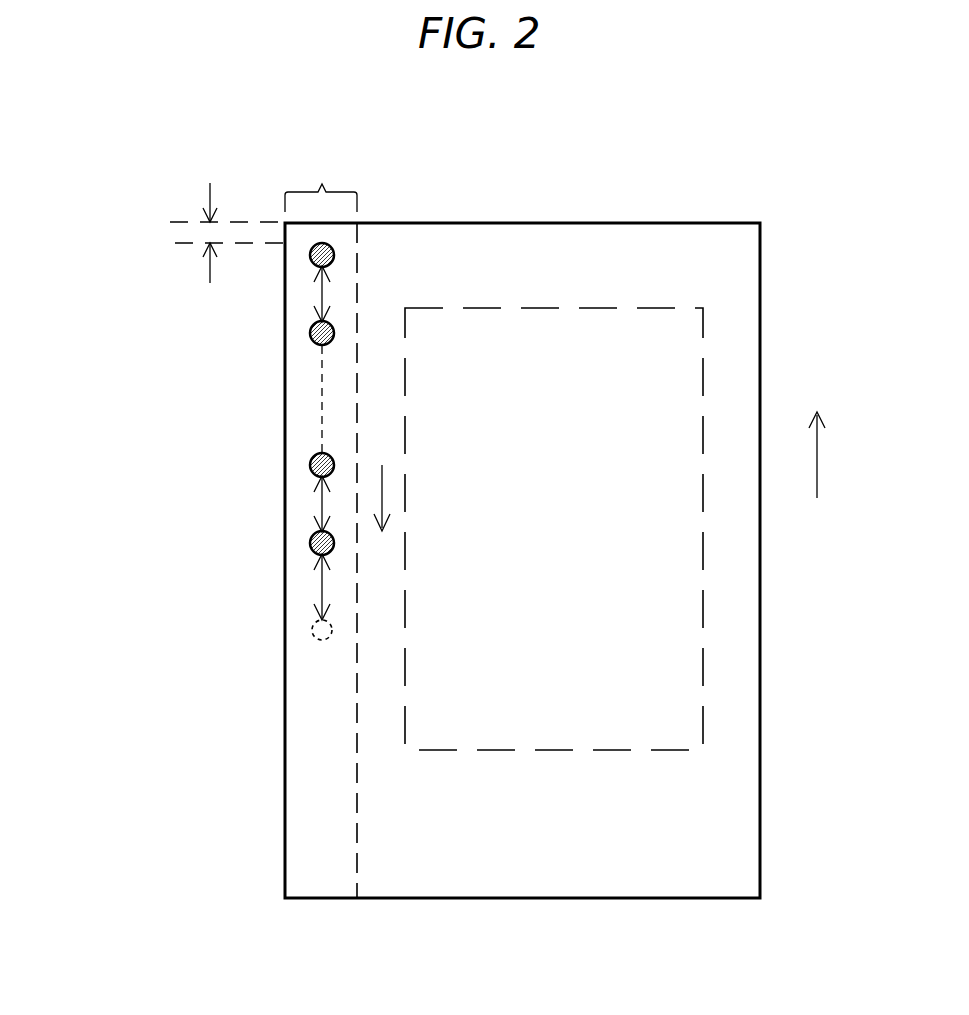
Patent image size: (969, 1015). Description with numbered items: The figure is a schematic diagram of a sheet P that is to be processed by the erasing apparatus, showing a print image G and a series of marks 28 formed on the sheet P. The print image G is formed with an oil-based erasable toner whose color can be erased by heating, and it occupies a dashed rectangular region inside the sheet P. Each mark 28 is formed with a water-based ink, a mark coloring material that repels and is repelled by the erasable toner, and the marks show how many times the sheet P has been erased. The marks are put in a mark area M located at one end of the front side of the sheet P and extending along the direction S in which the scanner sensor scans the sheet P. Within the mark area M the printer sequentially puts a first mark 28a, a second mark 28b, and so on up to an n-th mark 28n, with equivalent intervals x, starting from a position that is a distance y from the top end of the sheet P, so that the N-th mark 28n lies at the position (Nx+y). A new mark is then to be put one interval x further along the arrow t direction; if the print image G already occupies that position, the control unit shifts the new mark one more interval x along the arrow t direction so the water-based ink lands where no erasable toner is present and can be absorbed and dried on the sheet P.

The mark 28 is at (117, 442).
The first mark 28a is at (334, 249).
The second mark 28b is at (335, 333).
The n-th mark 28n is at (311, 463).
The sheet P is at (762, 297).
The print image G is at (703, 618).
The scanning direction S is at (818, 455).
The shift direction arrow t is at (384, 495).
The mark area M is at (321, 180).
The interval x is at (320, 290).
The distance y is at (180, 236).